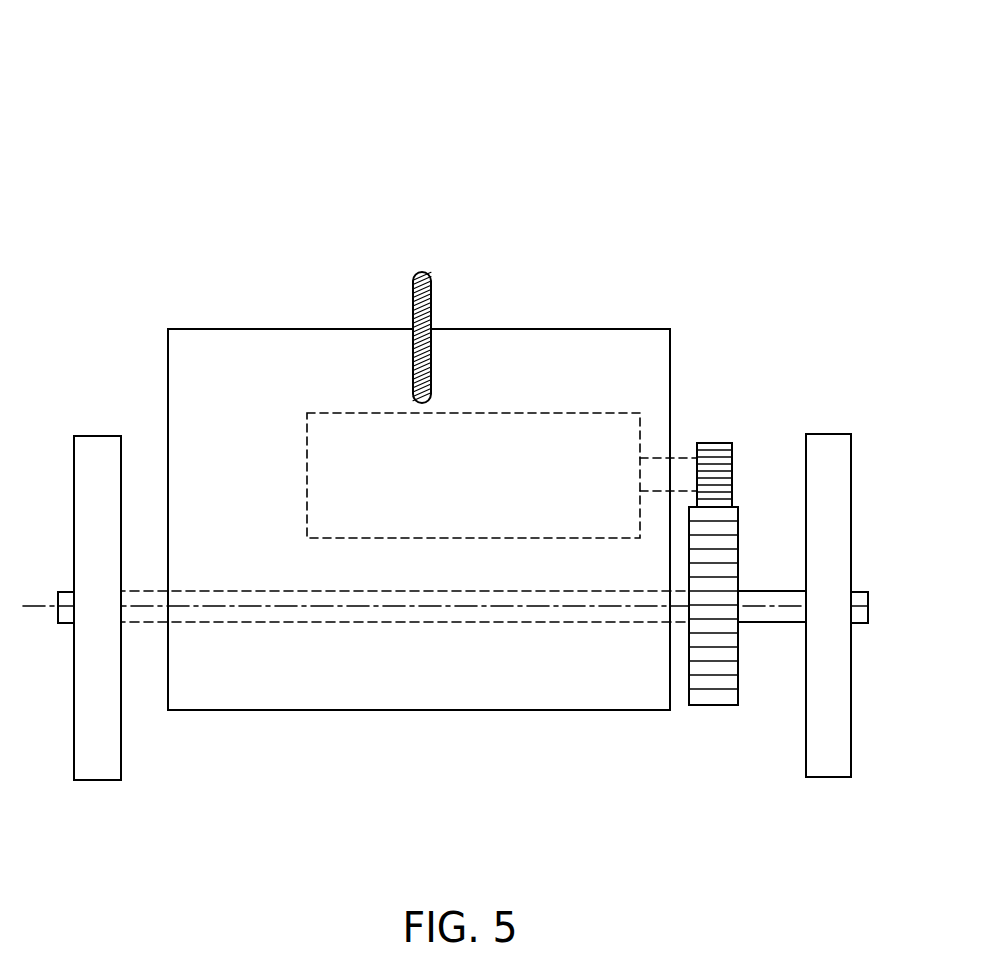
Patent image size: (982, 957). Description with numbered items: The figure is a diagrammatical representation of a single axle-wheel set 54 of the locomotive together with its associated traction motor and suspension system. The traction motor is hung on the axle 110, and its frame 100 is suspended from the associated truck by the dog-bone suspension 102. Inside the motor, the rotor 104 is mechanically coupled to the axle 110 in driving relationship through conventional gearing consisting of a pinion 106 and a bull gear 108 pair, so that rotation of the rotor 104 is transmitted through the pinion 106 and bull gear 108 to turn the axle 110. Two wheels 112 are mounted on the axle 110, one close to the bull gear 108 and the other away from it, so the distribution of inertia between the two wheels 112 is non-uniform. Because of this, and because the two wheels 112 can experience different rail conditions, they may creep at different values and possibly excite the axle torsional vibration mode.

The axle-wheel set 54 is at (148, 93).
The frame 100 is at (218, 329).
The dog-bone suspension 102 is at (432, 290).
The rotor 104 is at (307, 475).
The pinion 106 is at (712, 443).
The bull gear 108 is at (712, 705).
The axle 110 is at (868, 596).
The wheels 112 is at (97, 436).